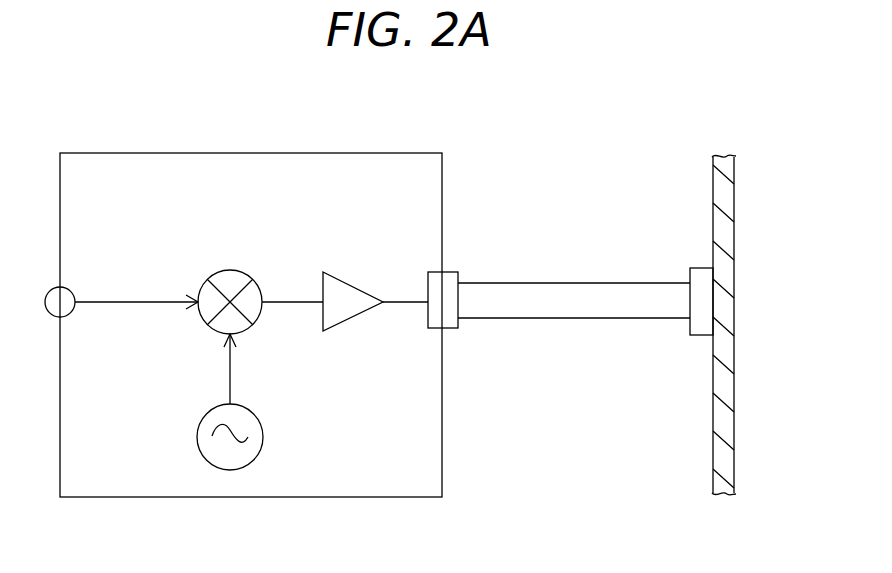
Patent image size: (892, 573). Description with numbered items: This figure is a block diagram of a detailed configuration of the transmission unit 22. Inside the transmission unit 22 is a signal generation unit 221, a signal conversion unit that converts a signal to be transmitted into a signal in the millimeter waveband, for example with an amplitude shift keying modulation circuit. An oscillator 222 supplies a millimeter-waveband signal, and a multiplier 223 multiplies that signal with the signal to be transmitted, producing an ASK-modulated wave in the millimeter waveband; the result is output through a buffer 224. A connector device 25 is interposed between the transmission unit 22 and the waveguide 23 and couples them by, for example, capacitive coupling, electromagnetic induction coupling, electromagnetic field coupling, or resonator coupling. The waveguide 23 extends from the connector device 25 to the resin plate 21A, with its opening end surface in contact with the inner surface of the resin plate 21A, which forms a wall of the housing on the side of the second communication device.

The transmission unit 22 is at (253, 154).
The signal generation unit 221 is at (158, 253).
The oscillator 222 is at (264, 436).
The multiplier 223 is at (228, 268).
The buffer 224 is at (348, 312).
The connector device 25 is at (450, 278).
The waveguide 23 is at (578, 319).
The resin plate 21A is at (728, 203).